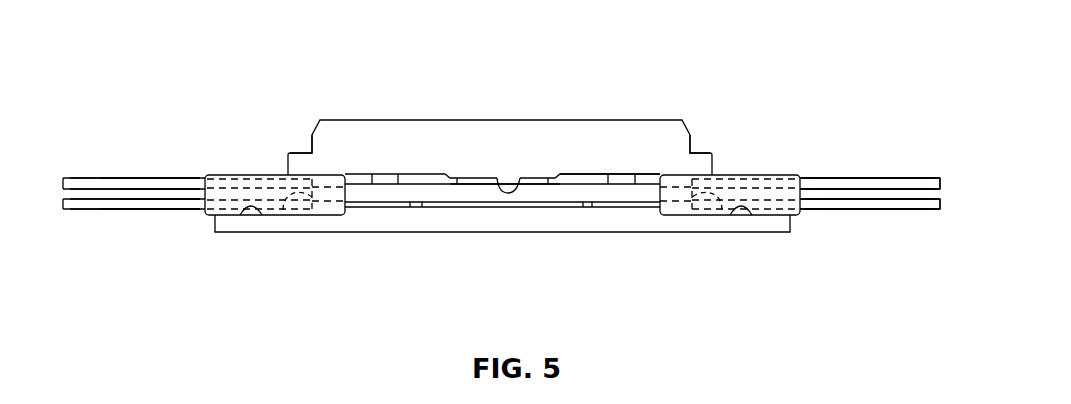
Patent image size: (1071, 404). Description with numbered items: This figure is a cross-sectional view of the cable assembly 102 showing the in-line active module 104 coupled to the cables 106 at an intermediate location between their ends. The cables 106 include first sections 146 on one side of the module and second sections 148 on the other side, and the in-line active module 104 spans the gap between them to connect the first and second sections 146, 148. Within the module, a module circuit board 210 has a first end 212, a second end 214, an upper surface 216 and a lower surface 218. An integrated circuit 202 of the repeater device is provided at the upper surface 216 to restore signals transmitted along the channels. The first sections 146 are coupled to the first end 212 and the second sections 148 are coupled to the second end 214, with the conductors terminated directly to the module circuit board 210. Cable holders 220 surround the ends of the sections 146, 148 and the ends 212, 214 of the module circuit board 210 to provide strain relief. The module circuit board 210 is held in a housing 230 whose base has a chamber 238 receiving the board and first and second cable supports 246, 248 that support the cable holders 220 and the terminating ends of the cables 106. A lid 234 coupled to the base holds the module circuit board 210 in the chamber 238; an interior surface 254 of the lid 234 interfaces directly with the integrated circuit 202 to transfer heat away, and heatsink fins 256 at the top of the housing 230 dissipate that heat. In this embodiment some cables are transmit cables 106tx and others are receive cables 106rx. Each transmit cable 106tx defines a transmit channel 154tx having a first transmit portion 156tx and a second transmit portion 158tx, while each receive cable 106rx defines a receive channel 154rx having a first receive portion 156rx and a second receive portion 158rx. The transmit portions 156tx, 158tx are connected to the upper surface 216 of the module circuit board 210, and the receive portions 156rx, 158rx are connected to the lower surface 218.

The cable assembly 102 is at (133, 58).
The in-line active module 104 is at (672, 88).
The cables 106 is at (82, 211).
The transmit cables 106tx is at (67, 178).
The receive cables 106rx is at (67, 211).
The first sections 146 is at (113, 175).
The second sections 148 is at (875, 232).
The transmit channel 154tx is at (136, 176).
The receive channel 154rx is at (136, 211).
The first transmit portion 156tx is at (163, 177).
The first receive portion 156rx is at (163, 211).
The second transmit portion 158tx is at (830, 176).
The second receive portion 158rx is at (827, 216).
The integrated circuit 202 is at (480, 186).
The module circuit board 210 is at (523, 196).
The first end 212 is at (297, 211).
The second end 214 is at (712, 206).
The upper surface 216 is at (580, 180).
The lower surface 218 is at (588, 209).
The cable holders 220 is at (250, 175).
The housing 230 is at (336, 117).
The lid 234 is at (708, 153).
The chamber 238 is at (388, 208).
The first cable support 246 is at (247, 206).
The second cable support 248 is at (741, 206).
The interior surface 254 is at (522, 178).
The heatsink fins 256 is at (311, 140).